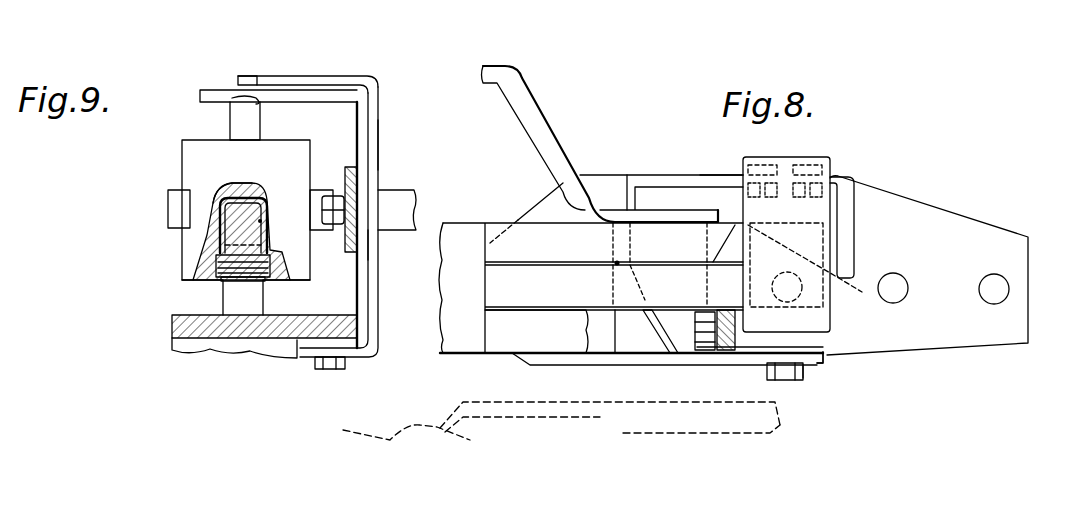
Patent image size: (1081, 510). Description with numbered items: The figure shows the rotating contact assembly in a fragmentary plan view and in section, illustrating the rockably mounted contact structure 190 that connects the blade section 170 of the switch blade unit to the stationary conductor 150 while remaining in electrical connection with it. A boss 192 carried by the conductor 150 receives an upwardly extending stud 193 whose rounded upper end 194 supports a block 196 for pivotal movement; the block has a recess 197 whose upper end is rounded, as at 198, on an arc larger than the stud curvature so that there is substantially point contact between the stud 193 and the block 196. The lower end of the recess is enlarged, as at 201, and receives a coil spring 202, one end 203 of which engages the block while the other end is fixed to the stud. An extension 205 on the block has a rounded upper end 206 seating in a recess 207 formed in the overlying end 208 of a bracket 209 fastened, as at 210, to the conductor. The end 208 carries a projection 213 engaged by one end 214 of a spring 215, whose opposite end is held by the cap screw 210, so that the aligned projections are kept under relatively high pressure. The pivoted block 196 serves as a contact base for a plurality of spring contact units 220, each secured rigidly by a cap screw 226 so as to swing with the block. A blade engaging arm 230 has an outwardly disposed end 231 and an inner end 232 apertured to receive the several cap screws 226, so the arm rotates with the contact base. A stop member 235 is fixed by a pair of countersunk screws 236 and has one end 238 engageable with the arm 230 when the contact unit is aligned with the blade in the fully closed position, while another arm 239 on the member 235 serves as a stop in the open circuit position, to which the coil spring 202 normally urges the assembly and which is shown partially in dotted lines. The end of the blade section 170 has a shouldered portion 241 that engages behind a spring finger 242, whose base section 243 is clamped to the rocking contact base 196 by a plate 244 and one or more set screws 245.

In FIG. 9, the stationary conductor 150 is at (228, 348).
In FIG. 8, the blade section 170 is at (366, 430).
In FIG. 8, the rockably mounted contact structure 190 is at (617, 420).
In FIG. 9, the boss 192 is at (232, 298).
In FIG. 9, the stud 193 is at (233, 240).
In FIG. 9, the rounded upper end of stud 194 is at (266, 194).
In FIG. 9, the block 196 is at (182, 150).
In FIG. 8, the block 196 is at (807, 340).
In FIG. 9, the recess 197 is at (261, 221).
In FIG. 9, the rounded upper end of recess 198 is at (224, 194).
In FIG. 9, the enlarged lower end of recess 201 is at (296, 282).
In FIG. 9, the coil spring 202 is at (216, 266).
In FIG. 9, the spring end 203 is at (252, 282).
In FIG. 9, the extension 205 is at (232, 118).
In FIG. 9, the rounded upper end of extension 206 is at (262, 106).
In FIG. 9, the recess in bracket end 207 is at (232, 96).
In FIG. 9, the overlying bracket end 208 is at (300, 94).
In FIG. 9, the bracket 209 is at (369, 247).
In FIG. 9, the bolt or cap screw 210 is at (322, 370).
In FIG. 9, the projection 213 is at (258, 67).
In FIG. 9, the spring end 214 is at (301, 67).
In FIG. 9, the spring 215 is at (379, 149).
In FIG. 8, the spring contact units 220 is at (530, 255).
In FIG. 8, the cap screw 226 is at (716, 352).
In FIG. 9, the blade engaging arm 230 is at (401, 196).
In FIG. 8, the blade engaging arm 230 is at (598, 175).
In FIG. 8, the outwardly disposed end of arm 231 is at (512, 76).
In FIG. 8, the inner end of arm 232 is at (758, 352).
In FIG. 8, the stop member 235 is at (705, 173).
In FIG. 9, the countersunk screws 236 is at (347, 250).
In FIG. 8, the countersunk screws 236 is at (784, 158).
In FIG. 9, the stop member end 238 is at (320, 190).
In FIG. 8, the stop member end 238 is at (637, 192).
In FIG. 8, the stop arm 239 is at (847, 238).
In FIG. 8, the shouldered portion 241 is at (620, 263).
In FIG. 8, the spring finger 242 is at (664, 352).
In FIG. 8, the base section 243 is at (805, 370).
In FIG. 9, the plate 244 is at (176, 205).
In FIG. 8, the plate 244 is at (824, 364).
In FIG. 8, the set screws 245 is at (802, 382).